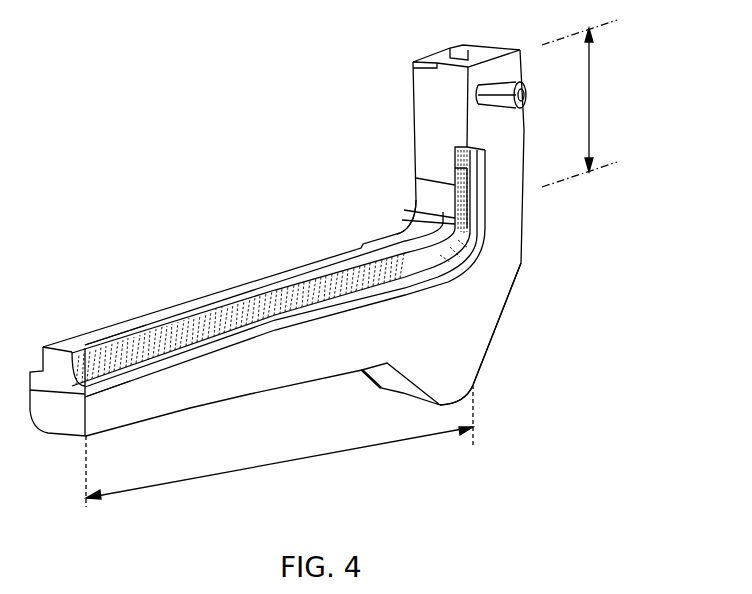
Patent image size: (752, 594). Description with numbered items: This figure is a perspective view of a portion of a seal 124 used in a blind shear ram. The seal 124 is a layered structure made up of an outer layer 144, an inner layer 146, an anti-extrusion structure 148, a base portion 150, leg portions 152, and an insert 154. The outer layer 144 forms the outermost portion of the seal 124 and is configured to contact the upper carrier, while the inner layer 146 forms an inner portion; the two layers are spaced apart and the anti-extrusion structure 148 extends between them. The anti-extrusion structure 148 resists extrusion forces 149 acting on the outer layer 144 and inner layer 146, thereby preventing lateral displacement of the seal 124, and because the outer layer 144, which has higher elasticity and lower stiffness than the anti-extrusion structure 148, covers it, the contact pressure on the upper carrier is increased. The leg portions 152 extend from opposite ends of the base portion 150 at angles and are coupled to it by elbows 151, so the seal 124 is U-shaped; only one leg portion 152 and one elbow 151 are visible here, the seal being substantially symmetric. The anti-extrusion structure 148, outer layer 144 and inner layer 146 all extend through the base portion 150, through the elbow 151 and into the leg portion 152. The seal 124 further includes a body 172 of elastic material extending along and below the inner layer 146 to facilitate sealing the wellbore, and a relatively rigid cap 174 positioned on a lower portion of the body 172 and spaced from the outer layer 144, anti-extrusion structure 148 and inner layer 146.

The seal 124 is at (374, 52).
The outer layer 144 is at (146, 333).
The inner layer 146 is at (130, 368).
The anti-extrusion structure 148 is at (212, 312).
The extrusion forces 149 is at (398, 213).
The base portion 150 is at (280, 463).
The elbow 151 is at (530, 303).
The leg portion 152 is at (594, 94).
The insert 154 is at (514, 82).
The body 172 is at (462, 355).
The cap 174 is at (396, 393).